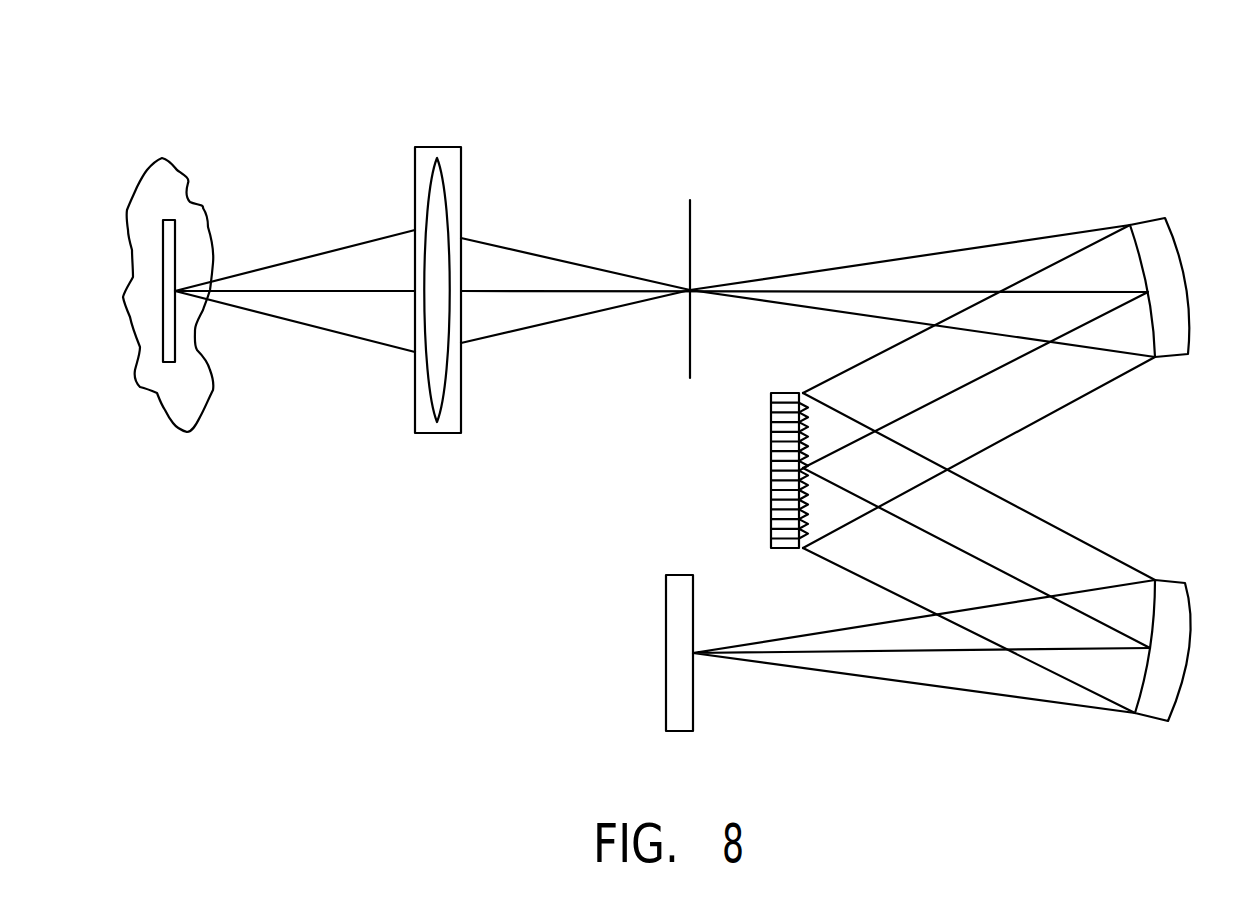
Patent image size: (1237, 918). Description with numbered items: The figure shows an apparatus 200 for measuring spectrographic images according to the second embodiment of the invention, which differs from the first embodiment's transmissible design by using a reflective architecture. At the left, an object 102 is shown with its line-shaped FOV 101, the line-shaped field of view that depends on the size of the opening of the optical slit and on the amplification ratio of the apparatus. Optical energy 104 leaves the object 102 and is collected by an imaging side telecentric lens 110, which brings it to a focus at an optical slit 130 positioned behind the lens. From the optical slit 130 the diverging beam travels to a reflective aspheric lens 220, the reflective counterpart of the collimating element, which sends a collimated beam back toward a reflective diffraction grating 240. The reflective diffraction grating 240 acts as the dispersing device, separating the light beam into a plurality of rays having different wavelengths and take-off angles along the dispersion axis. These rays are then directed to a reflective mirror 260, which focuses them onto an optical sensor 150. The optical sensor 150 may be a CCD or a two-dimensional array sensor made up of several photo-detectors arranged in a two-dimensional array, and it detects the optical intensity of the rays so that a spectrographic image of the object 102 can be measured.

The apparatus for measuring spectrographic images 200 is at (993, 110).
The line-shaped FOV 101 is at (170, 363).
The object 102 is at (174, 162).
The optical energy 104 is at (293, 325).
The imaging side telecentric lens 110 is at (433, 147).
The optical slit 130 is at (688, 215).
The reflective aspheric lens 220 is at (1148, 216).
The reflective diffraction grating 240 is at (771, 467).
The reflective mirror 260 is at (1153, 722).
The optical sensor 150 is at (666, 653).